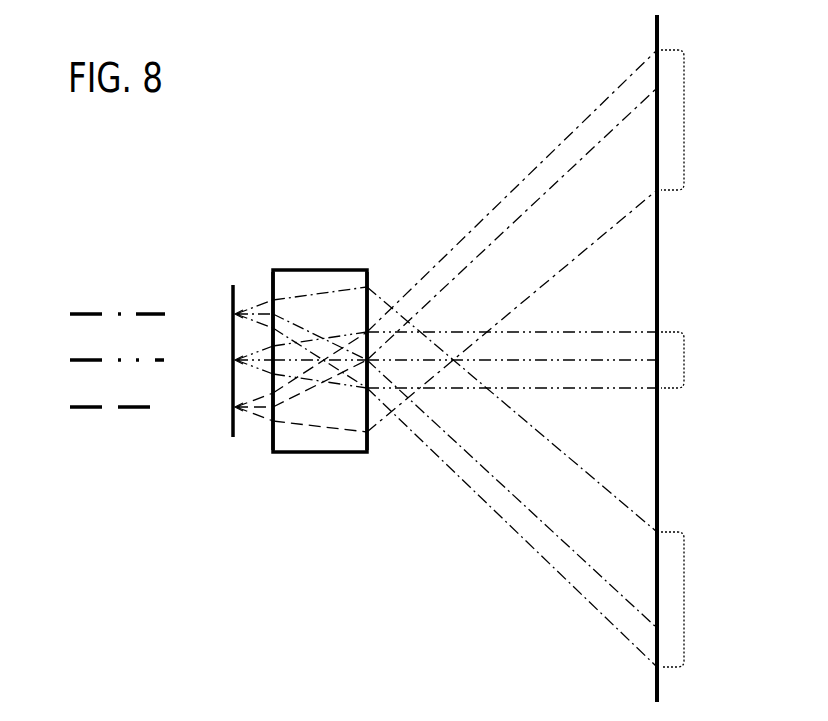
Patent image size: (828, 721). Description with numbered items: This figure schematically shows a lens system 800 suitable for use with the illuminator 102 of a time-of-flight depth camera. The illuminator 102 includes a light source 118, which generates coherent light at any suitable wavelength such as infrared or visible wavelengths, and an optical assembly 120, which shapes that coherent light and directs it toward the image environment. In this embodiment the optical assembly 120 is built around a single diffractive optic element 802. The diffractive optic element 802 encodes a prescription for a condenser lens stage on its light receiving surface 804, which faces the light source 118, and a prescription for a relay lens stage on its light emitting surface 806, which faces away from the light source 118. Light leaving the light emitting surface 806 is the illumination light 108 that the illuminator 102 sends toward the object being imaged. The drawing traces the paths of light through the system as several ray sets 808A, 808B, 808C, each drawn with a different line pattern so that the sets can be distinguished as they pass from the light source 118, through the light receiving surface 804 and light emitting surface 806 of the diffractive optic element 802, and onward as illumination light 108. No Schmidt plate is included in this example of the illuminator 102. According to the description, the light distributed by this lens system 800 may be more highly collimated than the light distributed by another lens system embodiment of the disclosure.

The illuminator 102 is at (422, 130).
The illumination light 108 is at (556, 610).
The light source 118 is at (232, 283).
The optical assembly 120 is at (289, 160).
The lens system 800 is at (321, 512).
The diffractive optic element 802 is at (321, 268).
The light receiving surface 804 is at (273, 280).
The light emitting surface 806 is at (369, 280).
The first light ray set 808A is at (704, 600).
The second light ray set 808B is at (706, 360).
The third light ray set 808C is at (706, 120).